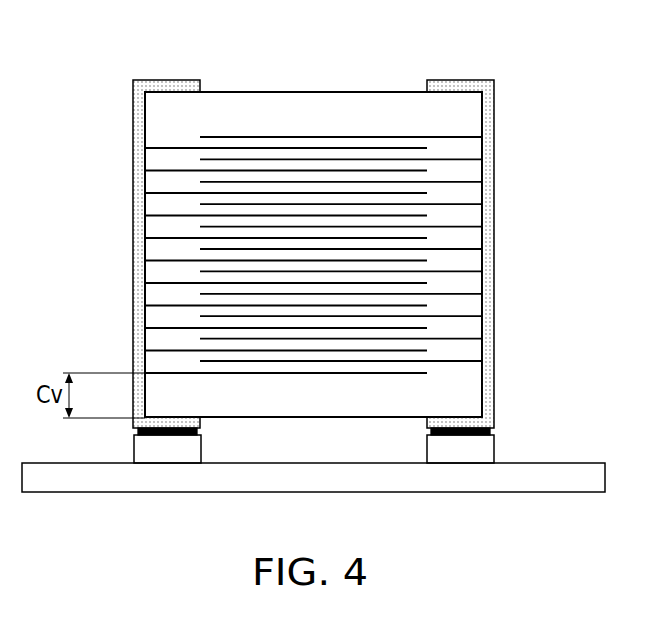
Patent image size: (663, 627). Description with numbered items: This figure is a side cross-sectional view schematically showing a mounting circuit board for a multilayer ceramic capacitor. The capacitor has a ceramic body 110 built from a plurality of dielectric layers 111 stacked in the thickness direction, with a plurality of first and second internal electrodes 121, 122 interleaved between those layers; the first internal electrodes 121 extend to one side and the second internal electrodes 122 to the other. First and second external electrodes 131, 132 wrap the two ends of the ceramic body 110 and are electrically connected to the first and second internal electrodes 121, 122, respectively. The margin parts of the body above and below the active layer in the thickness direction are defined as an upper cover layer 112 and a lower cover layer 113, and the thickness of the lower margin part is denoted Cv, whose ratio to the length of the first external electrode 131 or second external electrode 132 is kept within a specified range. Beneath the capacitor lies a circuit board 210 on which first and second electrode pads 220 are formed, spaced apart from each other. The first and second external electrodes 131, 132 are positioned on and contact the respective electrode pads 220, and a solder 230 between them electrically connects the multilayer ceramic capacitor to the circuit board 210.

The ceramic body 110 is at (274, 84).
The dielectric layer 111 is at (460, 173).
The upper cover layer 112 is at (363, 105).
The lower cover layer 113 is at (460, 393).
The first internal electrode 121 is at (173, 214).
The second internal electrode 122 is at (457, 226).
The first external electrode 131 is at (138, 255).
The second external electrode 132 is at (488, 255).
The circuit board 210 is at (525, 485).
The electrode pad 220 is at (458, 457).
The solder 230 is at (437, 440).